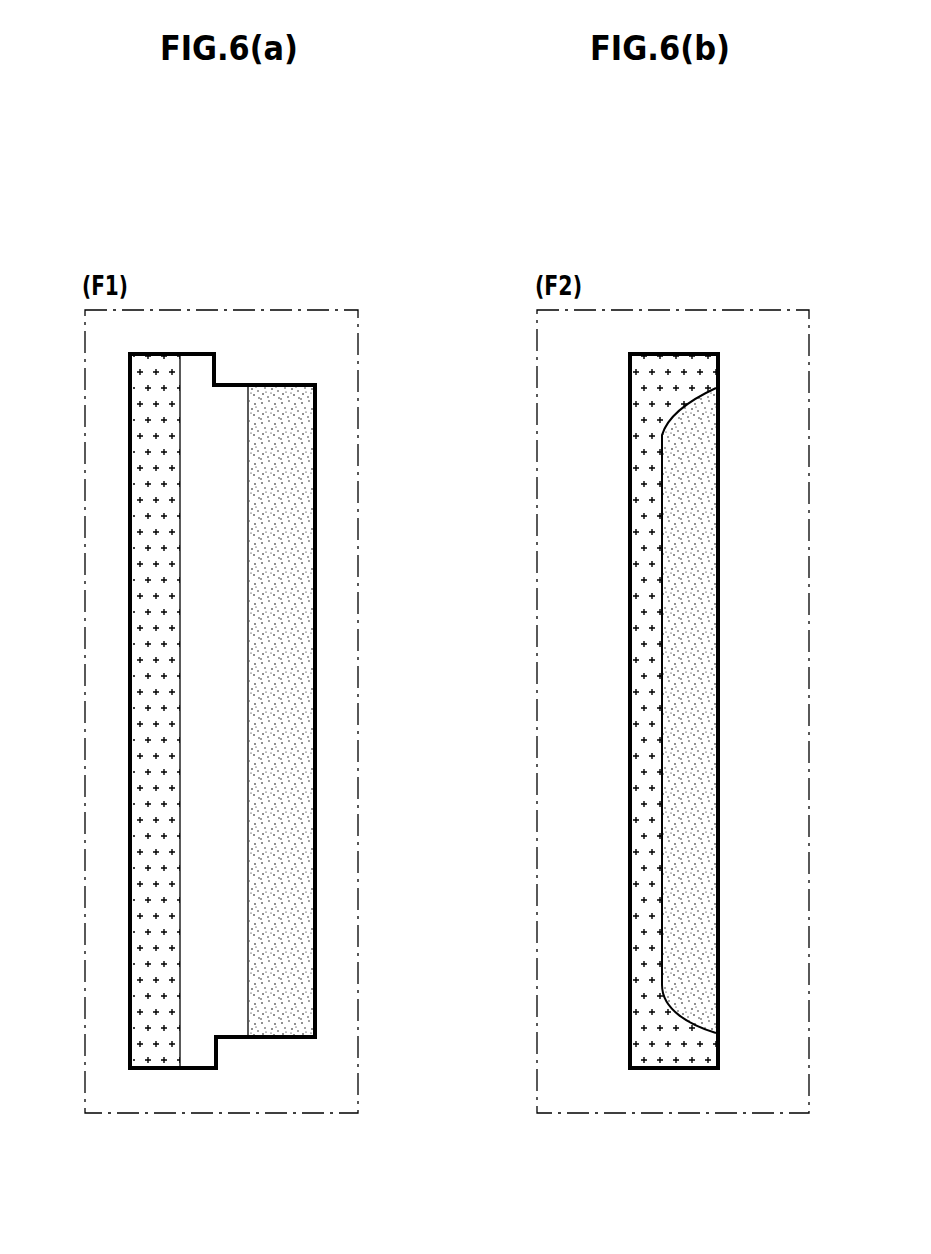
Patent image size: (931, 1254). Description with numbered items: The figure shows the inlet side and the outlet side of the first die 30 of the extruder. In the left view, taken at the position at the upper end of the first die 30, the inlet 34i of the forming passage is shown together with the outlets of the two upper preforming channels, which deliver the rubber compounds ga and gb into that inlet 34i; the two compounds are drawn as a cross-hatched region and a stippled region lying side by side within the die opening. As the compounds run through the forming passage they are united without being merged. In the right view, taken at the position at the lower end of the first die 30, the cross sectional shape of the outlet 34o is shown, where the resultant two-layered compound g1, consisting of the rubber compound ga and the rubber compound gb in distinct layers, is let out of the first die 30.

In FIG. 6A, the first die 30 is at (228, 310).
In FIG. 6B, the first die 30 is at (678, 310).
In FIG. 6A, the inlet 34i is at (232, 1038).
In FIG. 6B, the outlet 34o is at (718, 970).
In FIG. 6A, the rubber compound ga is at (275, 868).
In FIG. 6B, the rubber compound ga is at (680, 598).
In FIG. 6A, the rubber compound gb is at (155, 964).
In FIG. 6B, the rubber compound gb is at (645, 650).
In FIG. 6B, the two-layered compound g1 is at (565, 711).